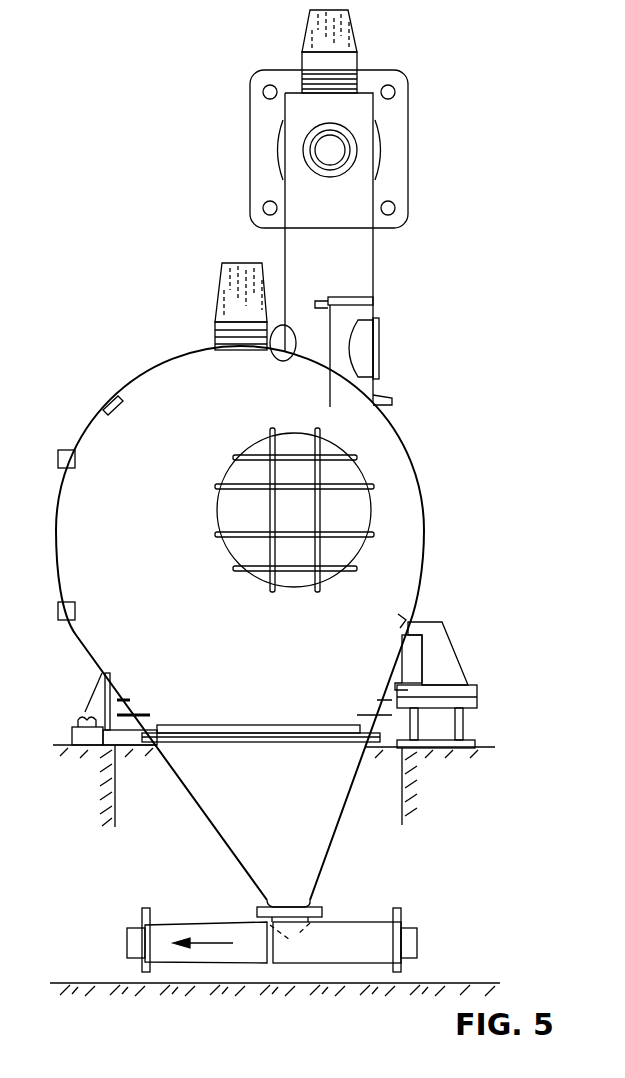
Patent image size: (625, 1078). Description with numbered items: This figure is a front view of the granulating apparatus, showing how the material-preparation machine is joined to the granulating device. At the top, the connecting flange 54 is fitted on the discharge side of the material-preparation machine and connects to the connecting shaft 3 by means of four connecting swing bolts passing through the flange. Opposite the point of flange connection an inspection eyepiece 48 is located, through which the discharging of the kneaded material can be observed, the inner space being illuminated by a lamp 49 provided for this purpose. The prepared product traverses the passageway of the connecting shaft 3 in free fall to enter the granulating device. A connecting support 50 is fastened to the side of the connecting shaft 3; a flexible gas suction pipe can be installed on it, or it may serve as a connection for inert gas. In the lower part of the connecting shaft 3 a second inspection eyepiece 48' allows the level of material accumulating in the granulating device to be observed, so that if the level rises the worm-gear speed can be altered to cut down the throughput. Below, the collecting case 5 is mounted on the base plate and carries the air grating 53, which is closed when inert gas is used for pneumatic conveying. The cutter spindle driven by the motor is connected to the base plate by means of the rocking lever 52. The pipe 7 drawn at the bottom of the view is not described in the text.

The connecting shaft 3 is at (345, 264).
The collecting case 5 is at (130, 393).
The outlet pipe tee 7 is at (292, 940).
The inspection eyepiece 48 is at (403, 150).
The second inspection eyepiece 48' is at (426, 348).
The lamp 49 is at (338, 40).
The connecting support 50 is at (270, 335).
The rocking lever 52 is at (437, 622).
The air grating 53 is at (352, 528).
The connecting flange 54 is at (390, 116).